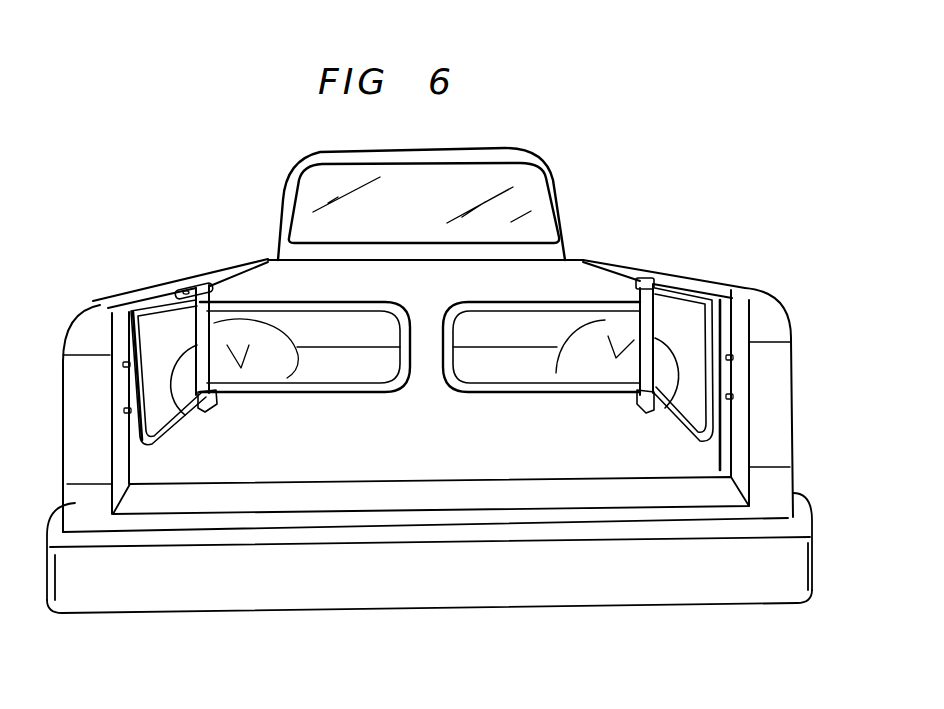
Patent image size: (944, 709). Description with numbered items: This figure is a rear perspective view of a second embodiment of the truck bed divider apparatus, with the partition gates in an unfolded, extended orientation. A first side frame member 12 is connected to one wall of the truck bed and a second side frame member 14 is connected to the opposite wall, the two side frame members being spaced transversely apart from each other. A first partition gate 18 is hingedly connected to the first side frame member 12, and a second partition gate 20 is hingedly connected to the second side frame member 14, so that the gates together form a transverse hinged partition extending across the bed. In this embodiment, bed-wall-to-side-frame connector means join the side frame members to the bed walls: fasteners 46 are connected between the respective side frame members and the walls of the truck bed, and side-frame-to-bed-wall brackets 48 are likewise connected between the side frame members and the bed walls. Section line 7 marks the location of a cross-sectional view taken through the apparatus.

The section line 7- 7 is at (373, 286).
The first side frame member 12 is at (172, 293).
The second side frame member 14 is at (678, 294).
The first partition gate 18 is at (316, 303).
The second partition gate 20 is at (542, 303).
The fasteners 46 is at (125, 410).
The side-frame-to-bed-wall brackets 48 is at (207, 398).